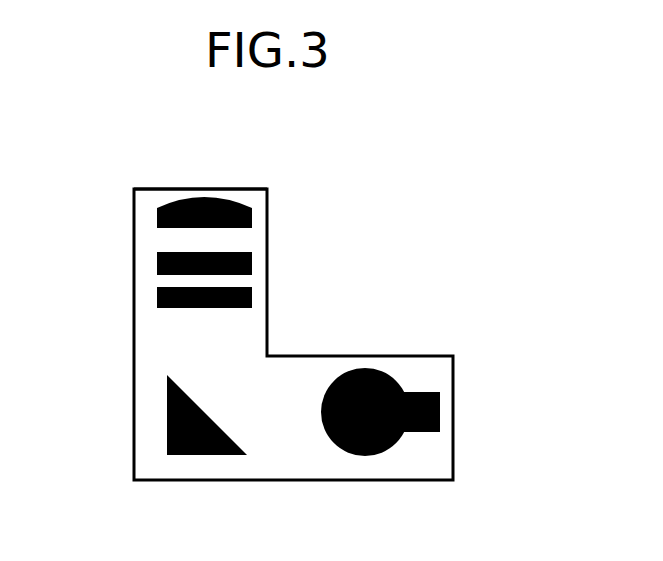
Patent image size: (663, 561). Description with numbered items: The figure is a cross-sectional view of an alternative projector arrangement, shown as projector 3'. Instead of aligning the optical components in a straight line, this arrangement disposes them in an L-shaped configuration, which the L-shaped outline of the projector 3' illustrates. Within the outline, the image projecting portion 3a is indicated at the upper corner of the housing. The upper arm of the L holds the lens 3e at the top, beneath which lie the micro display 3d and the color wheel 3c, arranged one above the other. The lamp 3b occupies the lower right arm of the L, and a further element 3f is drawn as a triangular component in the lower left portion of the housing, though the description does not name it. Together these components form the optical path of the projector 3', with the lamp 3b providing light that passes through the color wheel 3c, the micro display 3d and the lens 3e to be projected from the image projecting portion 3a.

The projector 3' is at (262, 334).
The image projecting portion 3a is at (247, 188).
The lamp 3b is at (372, 368).
The color wheel 3c is at (252, 295).
The micro display 3d is at (252, 255).
The lens 3e is at (157, 212).
The triangular pattern 3f is at (167, 415).